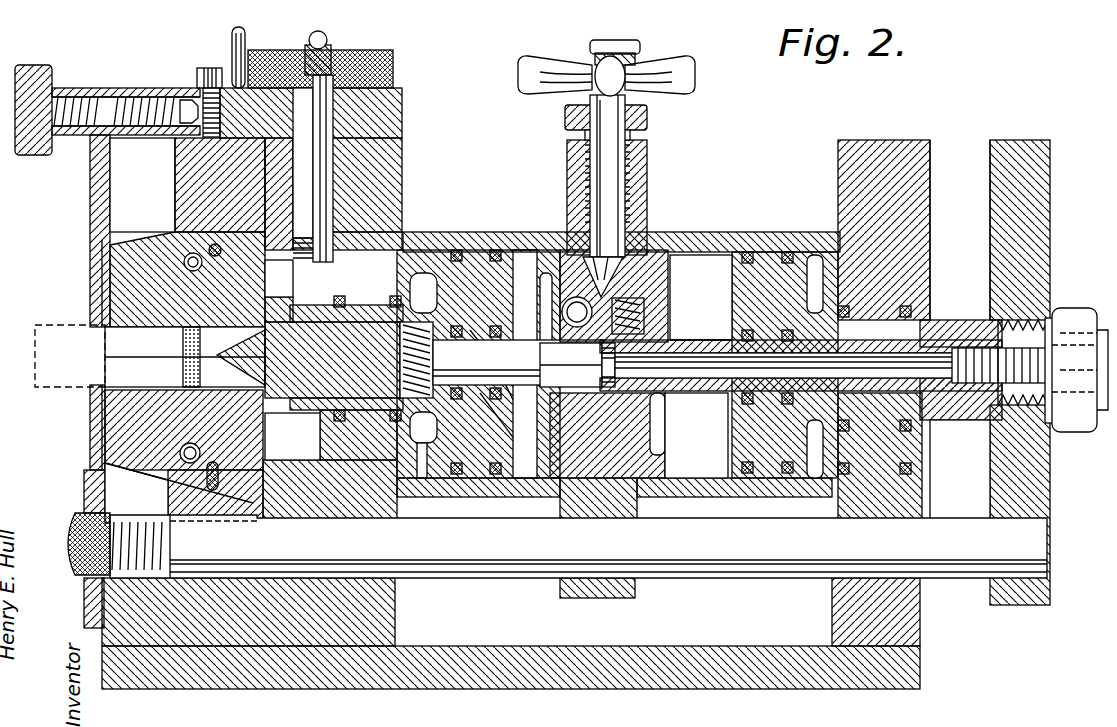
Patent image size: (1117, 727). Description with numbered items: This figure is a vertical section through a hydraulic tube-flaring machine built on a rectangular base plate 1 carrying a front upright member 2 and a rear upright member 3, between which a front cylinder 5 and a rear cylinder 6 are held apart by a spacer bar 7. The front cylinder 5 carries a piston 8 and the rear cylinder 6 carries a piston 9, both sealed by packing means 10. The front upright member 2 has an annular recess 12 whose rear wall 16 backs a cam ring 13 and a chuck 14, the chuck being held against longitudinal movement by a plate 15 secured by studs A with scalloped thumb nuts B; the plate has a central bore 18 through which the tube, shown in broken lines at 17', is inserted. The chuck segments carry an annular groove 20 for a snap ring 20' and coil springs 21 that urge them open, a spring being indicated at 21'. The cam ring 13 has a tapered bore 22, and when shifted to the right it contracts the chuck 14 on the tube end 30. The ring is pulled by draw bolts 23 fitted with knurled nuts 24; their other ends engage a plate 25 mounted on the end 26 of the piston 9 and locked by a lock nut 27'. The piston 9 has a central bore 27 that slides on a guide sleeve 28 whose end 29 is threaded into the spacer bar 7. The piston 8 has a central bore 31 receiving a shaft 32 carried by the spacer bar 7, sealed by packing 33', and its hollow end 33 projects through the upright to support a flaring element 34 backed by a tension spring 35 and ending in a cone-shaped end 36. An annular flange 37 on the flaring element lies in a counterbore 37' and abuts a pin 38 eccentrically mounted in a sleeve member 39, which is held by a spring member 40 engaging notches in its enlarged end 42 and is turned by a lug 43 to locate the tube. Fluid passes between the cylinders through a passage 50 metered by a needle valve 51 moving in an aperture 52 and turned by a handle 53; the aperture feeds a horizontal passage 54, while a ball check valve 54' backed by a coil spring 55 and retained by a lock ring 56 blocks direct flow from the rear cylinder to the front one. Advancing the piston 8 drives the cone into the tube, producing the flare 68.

The base plate 1 is at (230, 689).
The front upright member 2 is at (338, 646).
The upright member 3 is at (920, 630).
The cylinder 5 is at (428, 233).
The cylinder 6 is at (815, 236).
The spacer bar 7 is at (648, 154).
The piston 8 is at (521, 305).
The piston 9 is at (745, 246).
The packing means 10 is at (470, 232).
The annular recess 12 is at (142, 138).
The cam ring 13 is at (180, 165).
The chuck 14 is at (110, 282).
The plate 15 is at (92, 210).
The rear wall 16 is at (300, 178).
The rod end 17' is at (65, 371).
The central bore 18 is at (88, 440).
The annular groove 20 is at (293, 442).
The snap ring 20' is at (166, 240).
The coil springs 21 is at (185, 357).
The rod 21' is at (179, 493).
The bore 22 is at (193, 250).
The draw bolts 23 is at (704, 579).
The knurled nuts 24 is at (80, 540).
The plate 25 is at (988, 476).
The end of piston 26 is at (958, 322).
The central bore 27 is at (831, 319).
The lock nut 27' is at (1076, 355).
The guide sleeve 28 is at (706, 338).
The end of guide sleeve 29 is at (648, 398).
The end of tube 30 is at (200, 455).
The central bore 31 is at (503, 372).
The shaft 32 is at (520, 344).
The end of piston 33 is at (478, 341).
The packing 33' is at (510, 422).
The flaring element 34 is at (614, 500).
The tension spring 35 is at (520, 250).
The cone-shaped end 36 is at (245, 352).
The annular flange 37 is at (262, 451).
The counterbore 37' is at (214, 546).
The pin 38 is at (378, 196).
The sleeve member 39 is at (336, 130).
The spring member 40 is at (246, 36).
The enlarged end 42 is at (398, 72).
The lug 43 is at (332, 42).
The passage 50 is at (662, 282).
The needle valve 51 is at (612, 192).
The aperture 52 is at (640, 250).
The handle 53 is at (692, 86).
The horizontal passage 54 is at (601, 260).
The ball check valve 54' is at (571, 365).
The coil spring 55 is at (618, 364).
The lock ring 56 is at (648, 318).
The flared tube end 68 is at (270, 296).
The studs A is at (128, 99).
The scalloped thumb nuts B is at (42, 65).